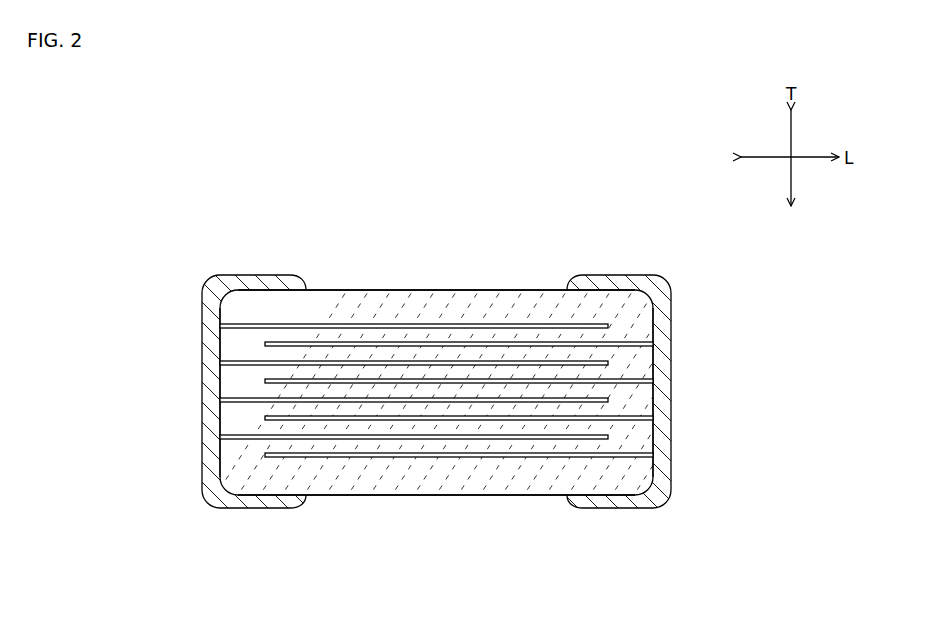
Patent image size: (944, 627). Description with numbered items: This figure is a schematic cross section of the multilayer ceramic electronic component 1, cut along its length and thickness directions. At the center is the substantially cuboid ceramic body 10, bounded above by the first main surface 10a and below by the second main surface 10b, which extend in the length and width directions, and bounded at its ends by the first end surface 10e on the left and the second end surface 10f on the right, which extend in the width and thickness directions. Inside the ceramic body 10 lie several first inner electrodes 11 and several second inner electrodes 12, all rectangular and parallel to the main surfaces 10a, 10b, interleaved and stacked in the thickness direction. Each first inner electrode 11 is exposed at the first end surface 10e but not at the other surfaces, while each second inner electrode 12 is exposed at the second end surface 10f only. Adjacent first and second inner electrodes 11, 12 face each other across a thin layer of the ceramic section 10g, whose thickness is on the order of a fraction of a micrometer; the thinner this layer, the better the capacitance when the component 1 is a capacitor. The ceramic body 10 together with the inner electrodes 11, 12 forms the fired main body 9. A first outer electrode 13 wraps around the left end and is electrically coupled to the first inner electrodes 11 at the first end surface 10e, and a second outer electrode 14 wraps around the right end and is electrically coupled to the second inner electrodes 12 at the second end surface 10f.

The multilayer ceramic electronic component 1 is at (639, 236).
The main body 9 is at (554, 252).
The ceramic body 10 is at (515, 286).
The first main surface 10a is at (424, 289).
The second main surface 10b is at (430, 495).
The first end surface 10e is at (220, 387).
The second end surface 10f is at (653, 362).
The ceramic section 10g is at (503, 442).
The first inner electrodes 11 is at (332, 325).
The second inner electrodes 12 is at (338, 459).
The first outer electrode 13 is at (199, 333).
The second outer electrode 14 is at (677, 335).